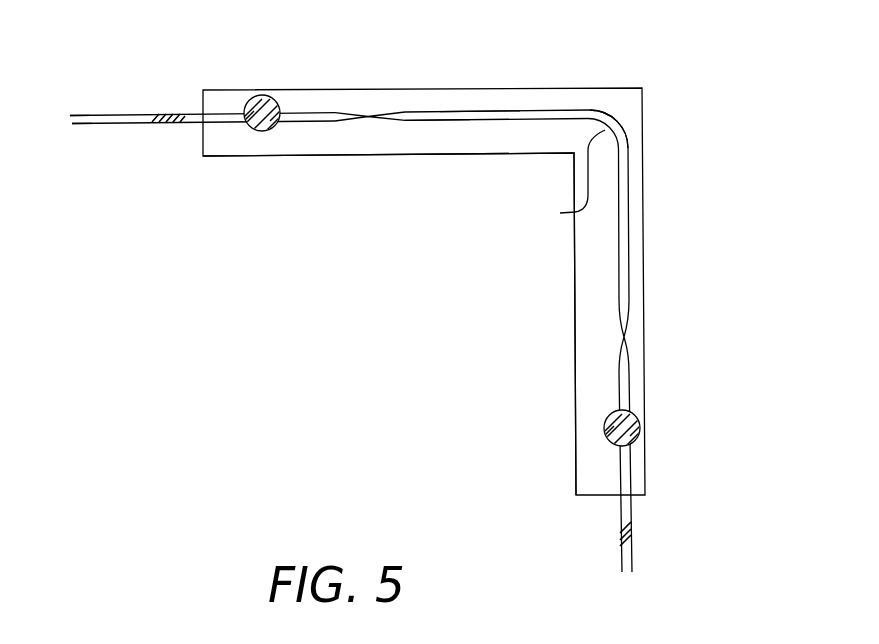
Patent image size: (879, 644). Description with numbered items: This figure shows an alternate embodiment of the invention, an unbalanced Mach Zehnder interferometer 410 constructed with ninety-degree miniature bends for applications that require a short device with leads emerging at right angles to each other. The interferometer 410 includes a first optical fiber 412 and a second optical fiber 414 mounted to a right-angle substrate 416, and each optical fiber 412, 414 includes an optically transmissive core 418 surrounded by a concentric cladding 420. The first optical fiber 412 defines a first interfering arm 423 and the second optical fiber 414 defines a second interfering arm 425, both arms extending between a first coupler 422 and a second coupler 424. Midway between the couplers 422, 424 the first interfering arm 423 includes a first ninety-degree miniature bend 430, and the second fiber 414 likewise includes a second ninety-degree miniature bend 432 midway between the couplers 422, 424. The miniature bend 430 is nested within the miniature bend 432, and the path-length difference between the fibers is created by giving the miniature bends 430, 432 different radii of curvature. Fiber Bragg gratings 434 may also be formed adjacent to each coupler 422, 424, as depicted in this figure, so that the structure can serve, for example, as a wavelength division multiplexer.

The unbalanced Mach Zehnder interferometer 410 is at (443, 38).
The first optical fiber 412 is at (127, 125).
The second optical fiber 414 is at (118, 113).
The right-angle substrate 416 is at (452, 155).
The optically transmissive core 418 is at (77, 127).
The concentric cladding 420 is at (70, 116).
The first coupler 422 is at (366, 130).
The first interfering arm 423 is at (414, 123).
The second coupler 424 is at (617, 336).
The second interfering arm 425 is at (485, 110).
The first 90° miniature bend 430 is at (561, 180).
The second 90° miniature bend 432 is at (609, 116).
The fiber Bragg gratings 434 is at (162, 114).